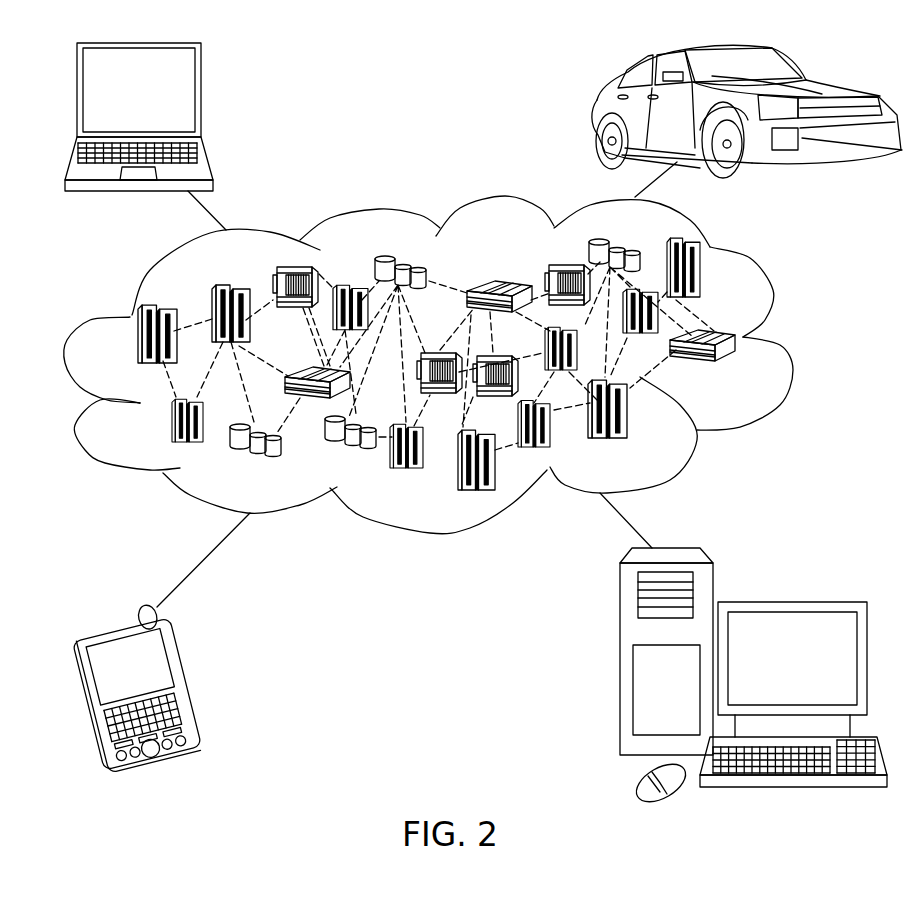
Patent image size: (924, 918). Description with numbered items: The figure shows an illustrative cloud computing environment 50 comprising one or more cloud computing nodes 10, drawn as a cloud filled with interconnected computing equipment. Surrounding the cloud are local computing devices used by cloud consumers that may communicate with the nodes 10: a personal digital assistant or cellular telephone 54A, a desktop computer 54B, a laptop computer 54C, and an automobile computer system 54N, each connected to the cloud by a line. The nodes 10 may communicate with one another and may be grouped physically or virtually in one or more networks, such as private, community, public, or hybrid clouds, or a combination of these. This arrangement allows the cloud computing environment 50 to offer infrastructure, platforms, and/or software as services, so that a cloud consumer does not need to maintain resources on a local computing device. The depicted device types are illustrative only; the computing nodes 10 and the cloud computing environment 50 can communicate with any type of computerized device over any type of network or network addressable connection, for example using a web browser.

The cloud computing node 10 is at (746, 374).
The cloud computing environment 50 is at (788, 345).
The personal digital assistant or cellular telephone 54A is at (195, 683).
The desktop computer 54B is at (790, 602).
The laptop computer 54C is at (201, 97).
The automobile computer system 54N is at (592, 110).